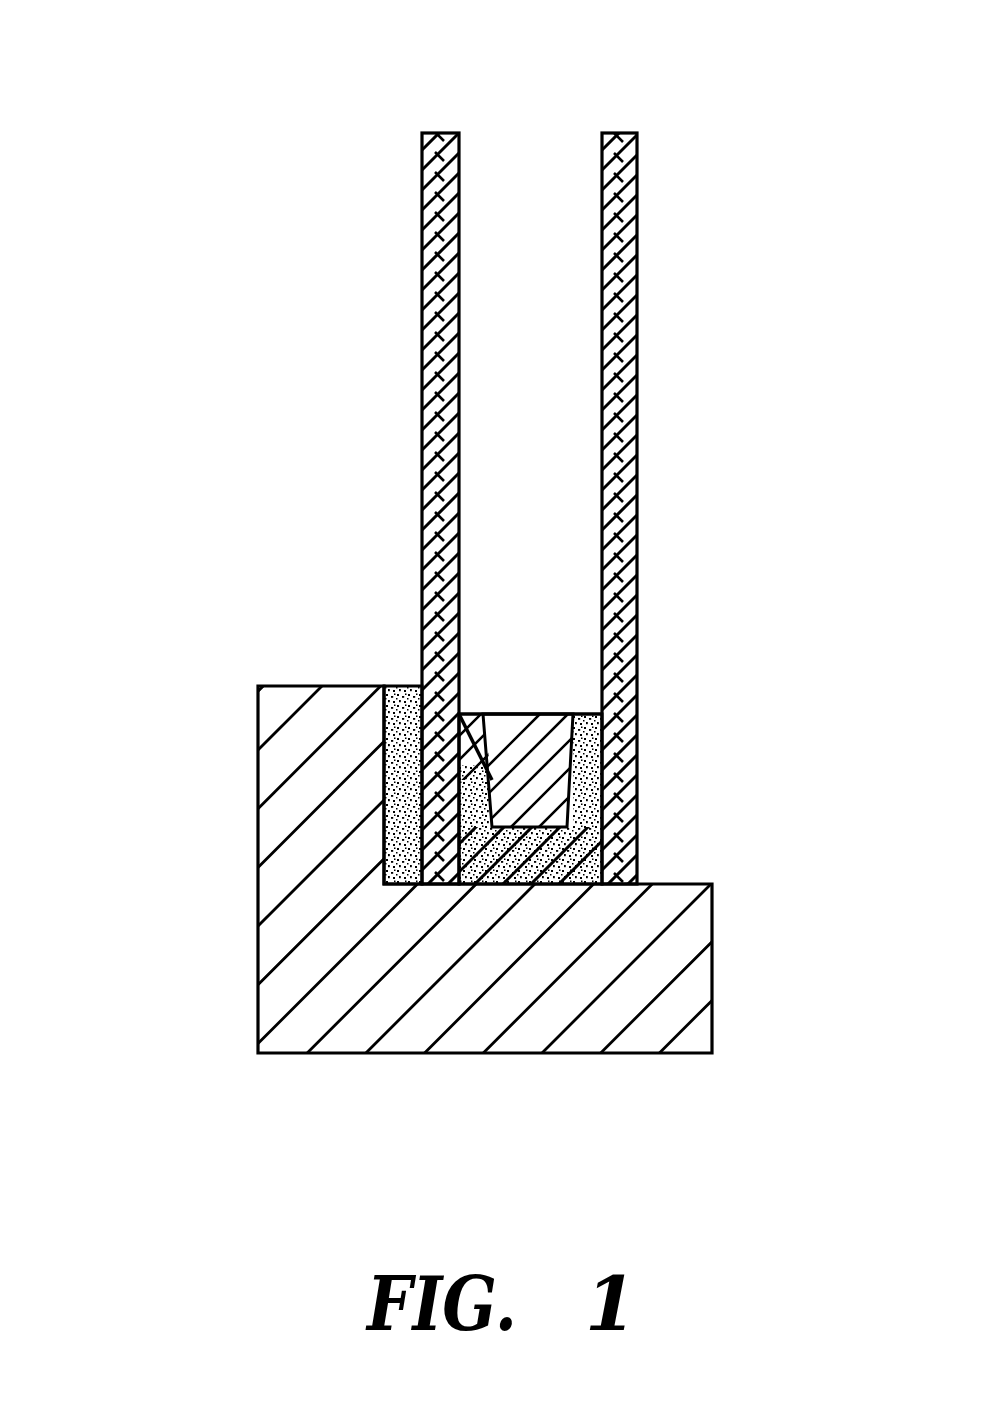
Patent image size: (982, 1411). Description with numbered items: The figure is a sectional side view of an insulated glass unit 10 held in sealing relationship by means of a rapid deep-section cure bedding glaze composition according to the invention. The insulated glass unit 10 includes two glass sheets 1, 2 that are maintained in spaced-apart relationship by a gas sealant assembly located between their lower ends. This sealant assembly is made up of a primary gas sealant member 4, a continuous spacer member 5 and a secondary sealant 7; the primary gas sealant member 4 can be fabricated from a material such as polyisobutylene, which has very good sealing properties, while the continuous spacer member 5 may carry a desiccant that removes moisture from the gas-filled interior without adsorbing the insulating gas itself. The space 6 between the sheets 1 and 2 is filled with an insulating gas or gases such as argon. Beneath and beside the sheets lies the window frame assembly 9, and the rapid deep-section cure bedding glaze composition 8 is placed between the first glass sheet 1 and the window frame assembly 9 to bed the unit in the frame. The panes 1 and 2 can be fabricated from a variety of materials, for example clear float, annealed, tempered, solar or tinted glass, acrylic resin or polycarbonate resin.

The glass sheet 1 is at (433, 317).
The glass sheet 2 is at (628, 298).
The primary gas sealant member 4 is at (637, 715).
The continuous spacer member 5 is at (543, 713).
The space 6 is at (520, 227).
The secondary sealant 7 is at (637, 845).
The rapid deep-section cure bedding glaze composition 8 is at (402, 685).
The window frame assembly 9 is at (282, 867).
The insulated glass unit 10 is at (190, 266).